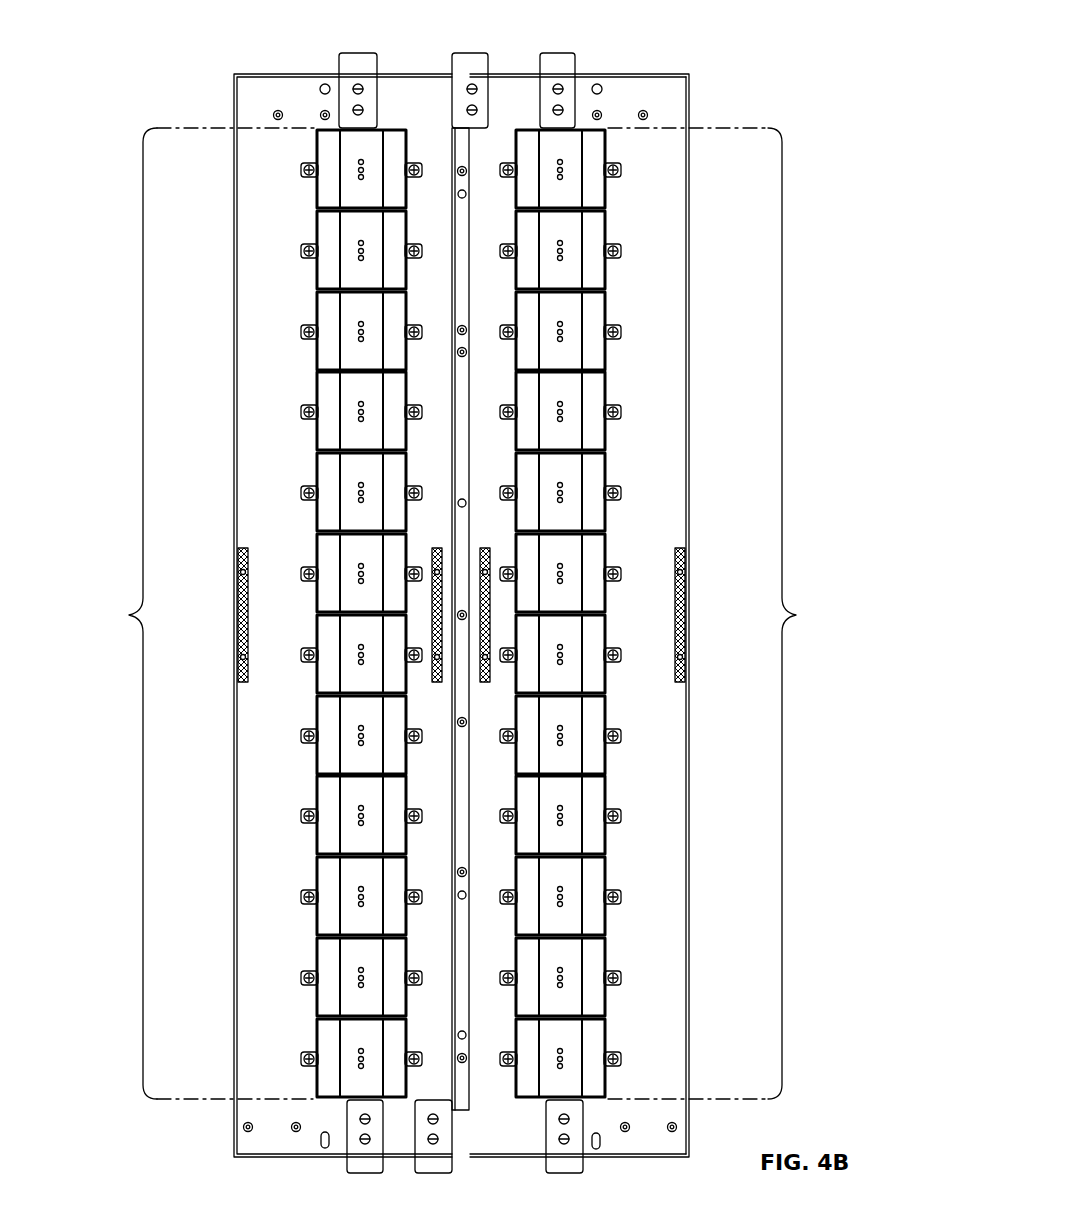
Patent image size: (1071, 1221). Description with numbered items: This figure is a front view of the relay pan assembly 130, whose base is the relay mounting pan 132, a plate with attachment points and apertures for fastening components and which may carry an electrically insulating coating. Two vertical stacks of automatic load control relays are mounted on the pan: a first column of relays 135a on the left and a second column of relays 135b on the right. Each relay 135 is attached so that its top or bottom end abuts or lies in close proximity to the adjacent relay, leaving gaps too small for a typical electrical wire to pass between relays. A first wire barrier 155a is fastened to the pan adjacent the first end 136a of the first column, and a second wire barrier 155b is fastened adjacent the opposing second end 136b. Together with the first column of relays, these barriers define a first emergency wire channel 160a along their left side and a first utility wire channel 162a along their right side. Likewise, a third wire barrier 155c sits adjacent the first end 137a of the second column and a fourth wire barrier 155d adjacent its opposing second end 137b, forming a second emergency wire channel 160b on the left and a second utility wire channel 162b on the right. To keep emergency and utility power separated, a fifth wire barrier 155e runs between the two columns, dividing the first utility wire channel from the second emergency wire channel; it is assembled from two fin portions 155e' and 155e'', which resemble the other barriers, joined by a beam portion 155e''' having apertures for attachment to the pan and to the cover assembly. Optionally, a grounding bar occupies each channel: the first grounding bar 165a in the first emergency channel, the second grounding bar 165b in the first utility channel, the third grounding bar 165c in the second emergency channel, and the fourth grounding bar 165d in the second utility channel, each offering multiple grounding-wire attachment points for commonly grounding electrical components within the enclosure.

The relay pan assembly 130 is at (738, 75).
The relay mounting pan 132 is at (673, 243).
The relay 135 is at (575, 243).
The first column of automatic load control relays 135a is at (195, 613).
The second column of automatic load control relays 135b is at (732, 613).
The first end of the first column of relays 136a is at (318, 127).
The second opposing end of the first column of relays 136b is at (397, 1108).
The first end of the second column of relays 137a is at (605, 120).
The second opposing end of the second column of relays 137b is at (600, 1108).
The first wire barrier 155a is at (345, 65).
The second wire barrier 155b is at (355, 1128).
The third wire barrier 155c is at (563, 72).
The fourth wire barrier 155d is at (556, 1126).
The fifth wire barrier 155e is at (518, 69).
The fin portion 155e' is at (438, 110).
The fin portion 155e'' is at (495, 1092).
The beam portion 155e''' is at (611, 313).
The first emergency wire channel 160a is at (253, 153).
The second emergency wire channel 160b is at (491, 163).
The first utility wire channel 162a is at (433, 163).
The second utility wire channel 162b is at (673, 160).
The first grounding bar 165a is at (238, 656).
The second grounding bar 165b is at (433, 592).
The third grounding bar 165c is at (490, 597).
The fourth grounding bar 165d is at (686, 657).